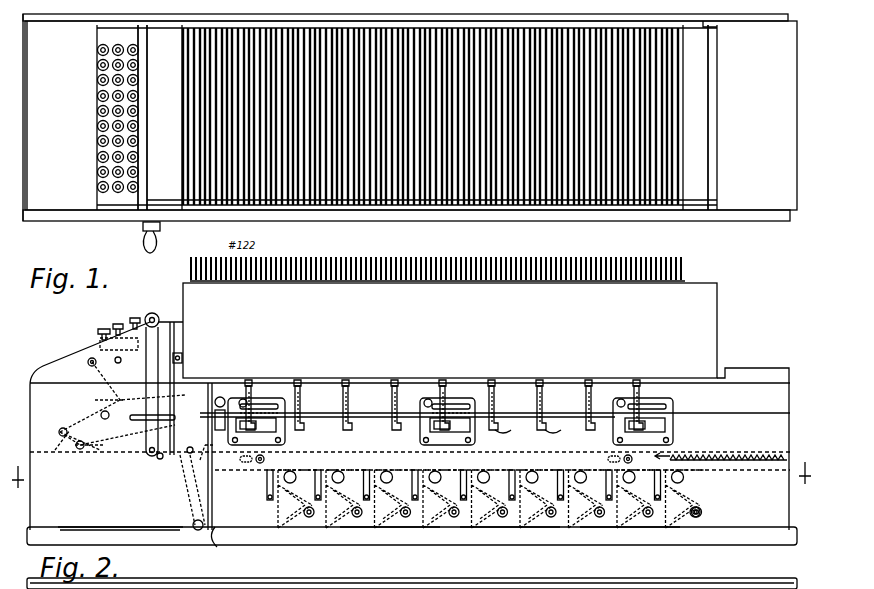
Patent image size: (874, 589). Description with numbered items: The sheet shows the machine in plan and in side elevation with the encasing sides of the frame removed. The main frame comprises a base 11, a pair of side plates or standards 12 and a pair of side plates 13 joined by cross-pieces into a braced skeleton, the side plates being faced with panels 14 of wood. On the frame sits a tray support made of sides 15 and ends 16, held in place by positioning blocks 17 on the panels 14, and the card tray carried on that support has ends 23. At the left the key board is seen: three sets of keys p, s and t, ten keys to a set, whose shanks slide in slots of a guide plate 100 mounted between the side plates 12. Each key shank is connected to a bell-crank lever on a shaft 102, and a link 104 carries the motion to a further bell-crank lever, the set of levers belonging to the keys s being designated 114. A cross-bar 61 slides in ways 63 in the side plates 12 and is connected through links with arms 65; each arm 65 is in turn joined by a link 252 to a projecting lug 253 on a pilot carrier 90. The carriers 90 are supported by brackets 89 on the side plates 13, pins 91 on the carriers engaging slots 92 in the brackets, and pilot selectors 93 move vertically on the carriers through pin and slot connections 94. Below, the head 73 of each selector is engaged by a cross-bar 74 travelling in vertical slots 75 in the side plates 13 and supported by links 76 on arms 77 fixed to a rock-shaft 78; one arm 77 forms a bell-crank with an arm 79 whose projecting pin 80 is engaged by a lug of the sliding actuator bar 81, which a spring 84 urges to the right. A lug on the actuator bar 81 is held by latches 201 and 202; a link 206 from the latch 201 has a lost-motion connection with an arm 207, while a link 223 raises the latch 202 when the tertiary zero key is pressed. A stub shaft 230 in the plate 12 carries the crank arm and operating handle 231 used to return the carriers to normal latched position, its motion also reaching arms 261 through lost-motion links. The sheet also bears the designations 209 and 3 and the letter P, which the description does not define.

In FIG. 1, the base 11 is at (411, 115).
In FIG. 2, the base 11 is at (338, 570).
In FIG. 1, the side plates or standards 12 is at (70, 30).
In FIG. 1, the side plates 13 is at (768, 24).
In FIG. 2, the side plates 13 is at (722, 432).
In FIG. 1, the panels 14 is at (618, 16).
In FIG. 1, the sides 15 is at (333, 22).
In FIG. 2, the sides 15 is at (450, 330).
In FIG. 1, the ends 16 is at (180, 112).
In FIG. 1, the positioning blocks 17 is at (718, 28).
In FIG. 2, the positioning blocks 17 is at (183, 360).
In FIG. 2, the ends 23 is at (190, 268).
In FIG. 1, the guide plate 100 is at (98, 112).
In FIG. 1, the crank arm and operating handle 231 is at (143, 228).
In FIG. 2, the crank arm and operating handle 231 is at (150, 360).
In FIG. 2, the cross-bar 61 is at (132, 418).
In FIG. 2, the ways 63 is at (138, 391).
In FIG. 2, the arms 65 is at (180, 504).
In FIG. 2, the shaft 102 is at (92, 368).
In FIG. 2, the link 104 is at (87, 400).
In FIG. 2, the bell-crank levers 114 is at (52, 449).
In FIG. 2, the latch 201 is at (190, 452).
In FIG. 2, the latch 202 is at (200, 462).
In FIG. 2, the link 209 is at (111, 402).
In FIG. 2, the link 223 is at (92, 459).
In FIG. 2, the stub shaft 230 is at (155, 458).
In FIG. 2, the link 252 is at (230, 395).
In FIG. 2, the projecting lug 253 is at (277, 434).
In FIG. 2, the link 206 is at (280, 395).
In FIG. 2, the arm 207 is at (245, 395).
In FIG. 2, the actuator bar 81 is at (610, 424).
In FIG. 2, the brackets 89 is at (465, 424).
In FIG. 2, the side bars or carriers 90 is at (377, 407).
In FIG. 2, the pins 91 is at (430, 395).
In FIG. 2, the slots 92 is at (450, 395).
In FIG. 2, the pilot selectors 93 is at (509, 415).
In FIG. 2, the pin and slot connections 94 is at (540, 410).
In FIG. 2, the head 73 is at (500, 530).
In FIG. 2, the cross-bar 74 is at (291, 499).
In FIG. 2, the vertical slots 75 is at (289, 457).
In FIG. 2, the links 76 is at (209, 545).
In FIG. 2, the arms 77 is at (275, 548).
In FIG. 2, the rock-shaft 78 is at (698, 514).
In FIG. 2, the arm 79 is at (665, 472).
In FIG. 2, the laterally projecting pin 80 is at (509, 499).
In FIG. 2, the spring 84 is at (725, 462).
In FIG. 2, the arms 261 is at (195, 548).
In FIG. 2, the section line 3 is at (411, 466).
In FIG. 1, the set of keys p is at (103, 190).
In FIG. 2, the set of keys p is at (100, 330).
In FIG. 1, the set of keys s is at (118, 190).
In FIG. 2, the set of keys s is at (118, 322).
In FIG. 1, the set of keys t is at (135, 190).
In FIG. 2, the set of keys t is at (140, 318).
In FIG. 1, the type bars P is at (355, 207).
In FIG. 2, the type bars P is at (432, 257).